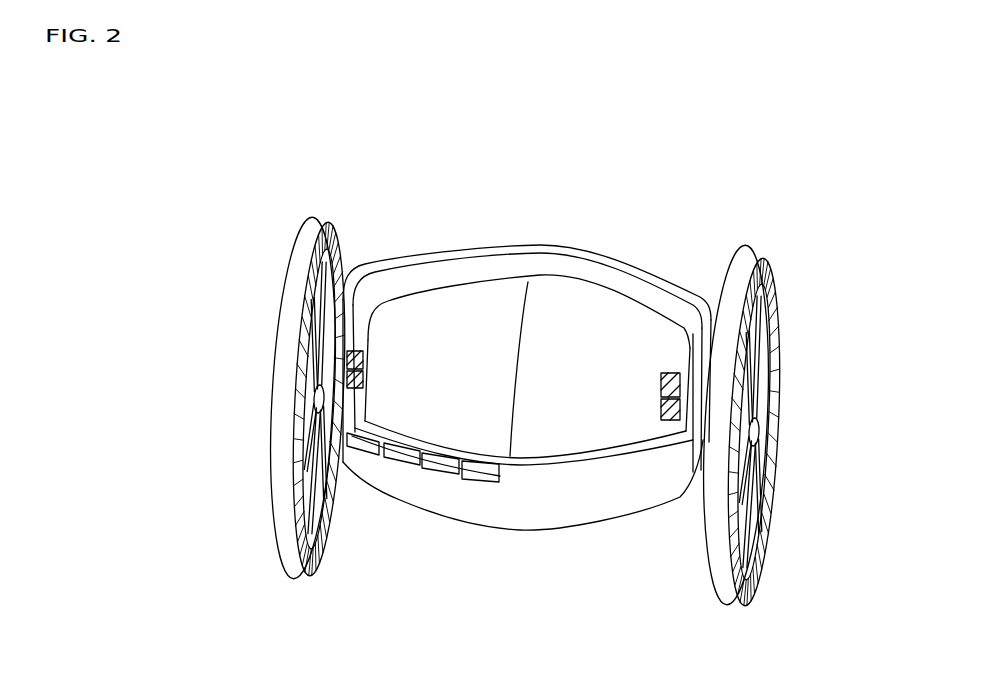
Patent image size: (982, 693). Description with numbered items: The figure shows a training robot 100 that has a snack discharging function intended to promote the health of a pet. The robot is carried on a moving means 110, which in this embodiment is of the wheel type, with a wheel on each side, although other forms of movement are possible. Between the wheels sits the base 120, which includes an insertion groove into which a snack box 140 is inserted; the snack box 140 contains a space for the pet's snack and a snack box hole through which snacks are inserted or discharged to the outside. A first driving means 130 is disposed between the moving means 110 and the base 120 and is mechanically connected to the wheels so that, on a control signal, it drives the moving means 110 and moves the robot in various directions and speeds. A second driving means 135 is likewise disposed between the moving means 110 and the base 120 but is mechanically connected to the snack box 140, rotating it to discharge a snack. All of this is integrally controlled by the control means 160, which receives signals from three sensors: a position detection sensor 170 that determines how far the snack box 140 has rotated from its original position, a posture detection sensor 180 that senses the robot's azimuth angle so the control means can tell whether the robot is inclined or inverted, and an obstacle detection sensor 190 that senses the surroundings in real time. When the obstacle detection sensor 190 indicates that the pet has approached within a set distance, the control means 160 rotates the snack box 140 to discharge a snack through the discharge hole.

The training robot 100 is at (466, 158).
The moving means 110 is at (300, 252).
The base 120 is at (641, 266).
The first driving means 130 is at (310, 407).
The second driving means 135 is at (345, 352).
The snack box 140 is at (567, 303).
The control means 160 is at (356, 452).
The position detection sensor 170 is at (393, 466).
The posture detection sensor 180 is at (432, 476).
The obstacle detection sensor 190 is at (480, 482).